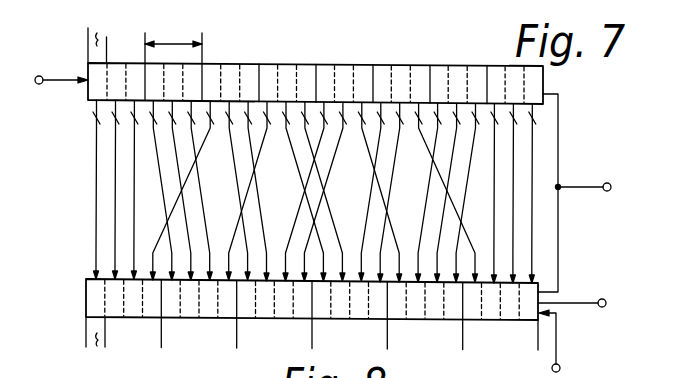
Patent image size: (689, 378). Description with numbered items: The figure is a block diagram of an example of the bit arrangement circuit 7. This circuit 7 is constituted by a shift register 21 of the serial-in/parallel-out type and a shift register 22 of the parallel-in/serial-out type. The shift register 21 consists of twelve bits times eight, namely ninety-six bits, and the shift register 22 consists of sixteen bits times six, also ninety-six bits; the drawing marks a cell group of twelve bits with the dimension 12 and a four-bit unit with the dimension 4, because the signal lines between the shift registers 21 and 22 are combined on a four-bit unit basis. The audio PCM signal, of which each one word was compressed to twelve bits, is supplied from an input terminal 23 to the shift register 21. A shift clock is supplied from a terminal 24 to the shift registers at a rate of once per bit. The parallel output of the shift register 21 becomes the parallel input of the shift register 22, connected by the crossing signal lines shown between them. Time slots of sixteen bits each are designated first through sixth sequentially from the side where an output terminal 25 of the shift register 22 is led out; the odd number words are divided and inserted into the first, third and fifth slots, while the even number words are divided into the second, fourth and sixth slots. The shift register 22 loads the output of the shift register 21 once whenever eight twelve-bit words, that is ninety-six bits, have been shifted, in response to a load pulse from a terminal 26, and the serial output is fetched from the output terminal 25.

The cell width / register cell 4 is at (67, 127).
The bit arrangement circuit 7 is at (461, 43).
The group width 12 is at (180, 44).
The shift register 21 is at (333, 65).
The shift register 22 is at (86, 300).
The input terminal 23 is at (39, 76).
The terminal 24 is at (607, 191).
The output terminal 25 is at (603, 307).
The terminal 26 is at (560, 369).